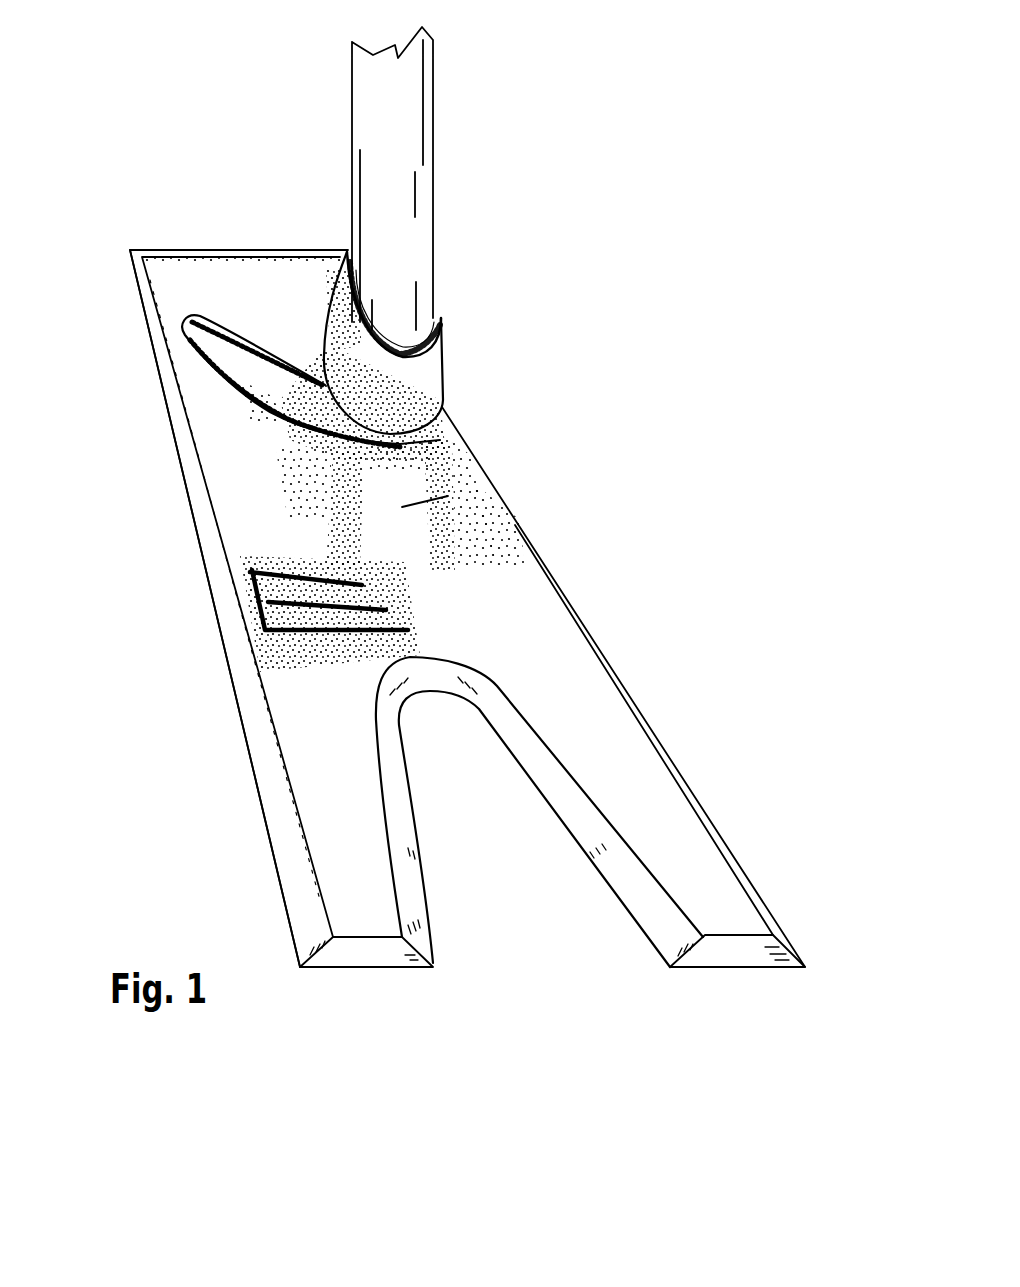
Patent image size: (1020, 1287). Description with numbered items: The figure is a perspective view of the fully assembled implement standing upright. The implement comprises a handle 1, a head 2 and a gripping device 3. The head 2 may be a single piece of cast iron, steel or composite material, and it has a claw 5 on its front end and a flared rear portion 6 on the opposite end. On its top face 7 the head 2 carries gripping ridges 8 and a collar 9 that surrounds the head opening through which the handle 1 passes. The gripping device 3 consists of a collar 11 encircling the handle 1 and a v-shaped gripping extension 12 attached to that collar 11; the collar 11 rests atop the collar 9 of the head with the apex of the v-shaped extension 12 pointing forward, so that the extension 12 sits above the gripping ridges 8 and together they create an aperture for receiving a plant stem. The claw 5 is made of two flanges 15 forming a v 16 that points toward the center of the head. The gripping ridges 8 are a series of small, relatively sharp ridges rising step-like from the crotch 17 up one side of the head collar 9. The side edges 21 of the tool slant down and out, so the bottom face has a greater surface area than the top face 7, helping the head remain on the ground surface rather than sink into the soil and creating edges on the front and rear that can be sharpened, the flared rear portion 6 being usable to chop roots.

The handle 1 is at (440, 150).
The head 2 is at (632, 442).
The gripping device 3 is at (443, 388).
The claw 5 is at (223, 690).
The flared rear portion 6 is at (103, 259).
The top face 7 is at (527, 640).
The gripping ridges 8 is at (250, 607).
The collar 9 is at (445, 497).
The collar 11 is at (436, 322).
The v-shaped gripping extension 12 is at (270, 387).
The flanges 15 is at (380, 980).
The v 16 is at (503, 833).
The crotch 17 is at (425, 681).
The side edges 21 is at (207, 533).